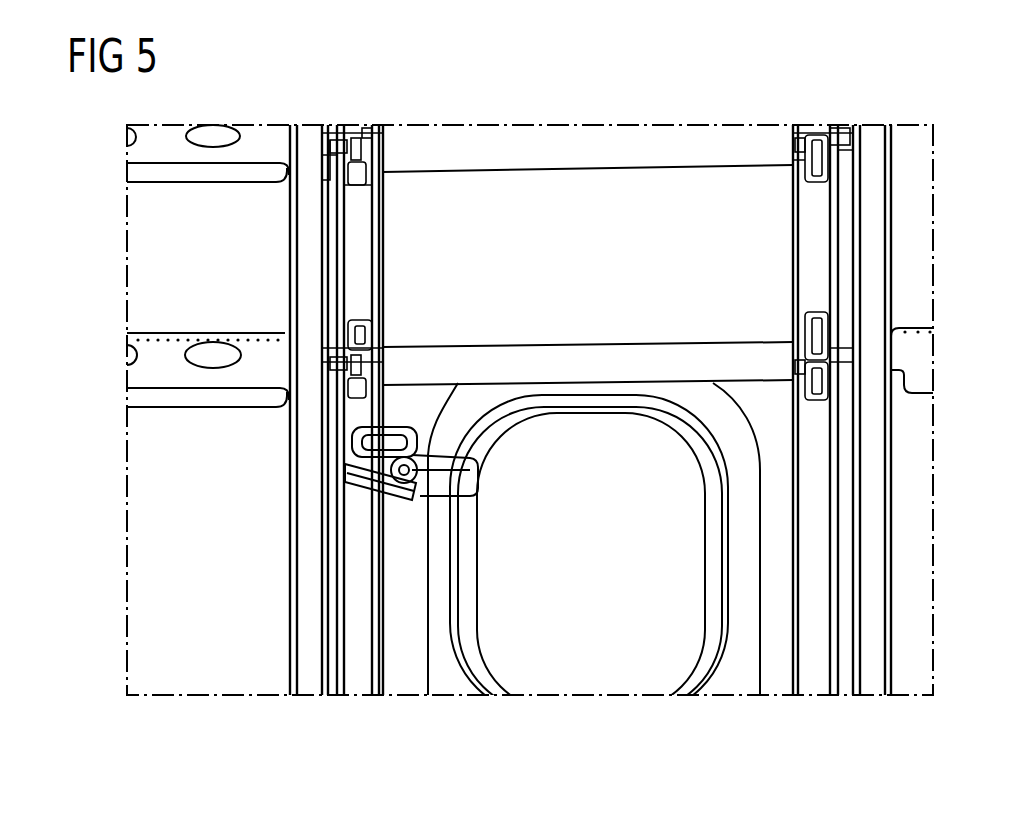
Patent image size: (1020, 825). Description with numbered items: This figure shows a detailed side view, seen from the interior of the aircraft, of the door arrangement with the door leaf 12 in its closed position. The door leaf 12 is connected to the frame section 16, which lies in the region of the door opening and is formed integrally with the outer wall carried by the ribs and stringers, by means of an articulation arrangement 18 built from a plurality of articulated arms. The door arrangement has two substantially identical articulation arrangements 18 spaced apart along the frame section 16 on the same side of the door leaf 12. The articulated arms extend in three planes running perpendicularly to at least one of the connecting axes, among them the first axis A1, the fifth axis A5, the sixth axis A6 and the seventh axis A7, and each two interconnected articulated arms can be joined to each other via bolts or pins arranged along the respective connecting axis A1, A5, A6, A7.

The door leaf 12 is at (570, 188).
The frame section 16 is at (309, 128).
The articulation arrangement 18 is at (317, 581).
The first axis A1 is at (352, 445).
The fifth axis A5 is at (480, 476).
The sixth axis A6 is at (355, 430).
The seventh axis A7 is at (424, 500).